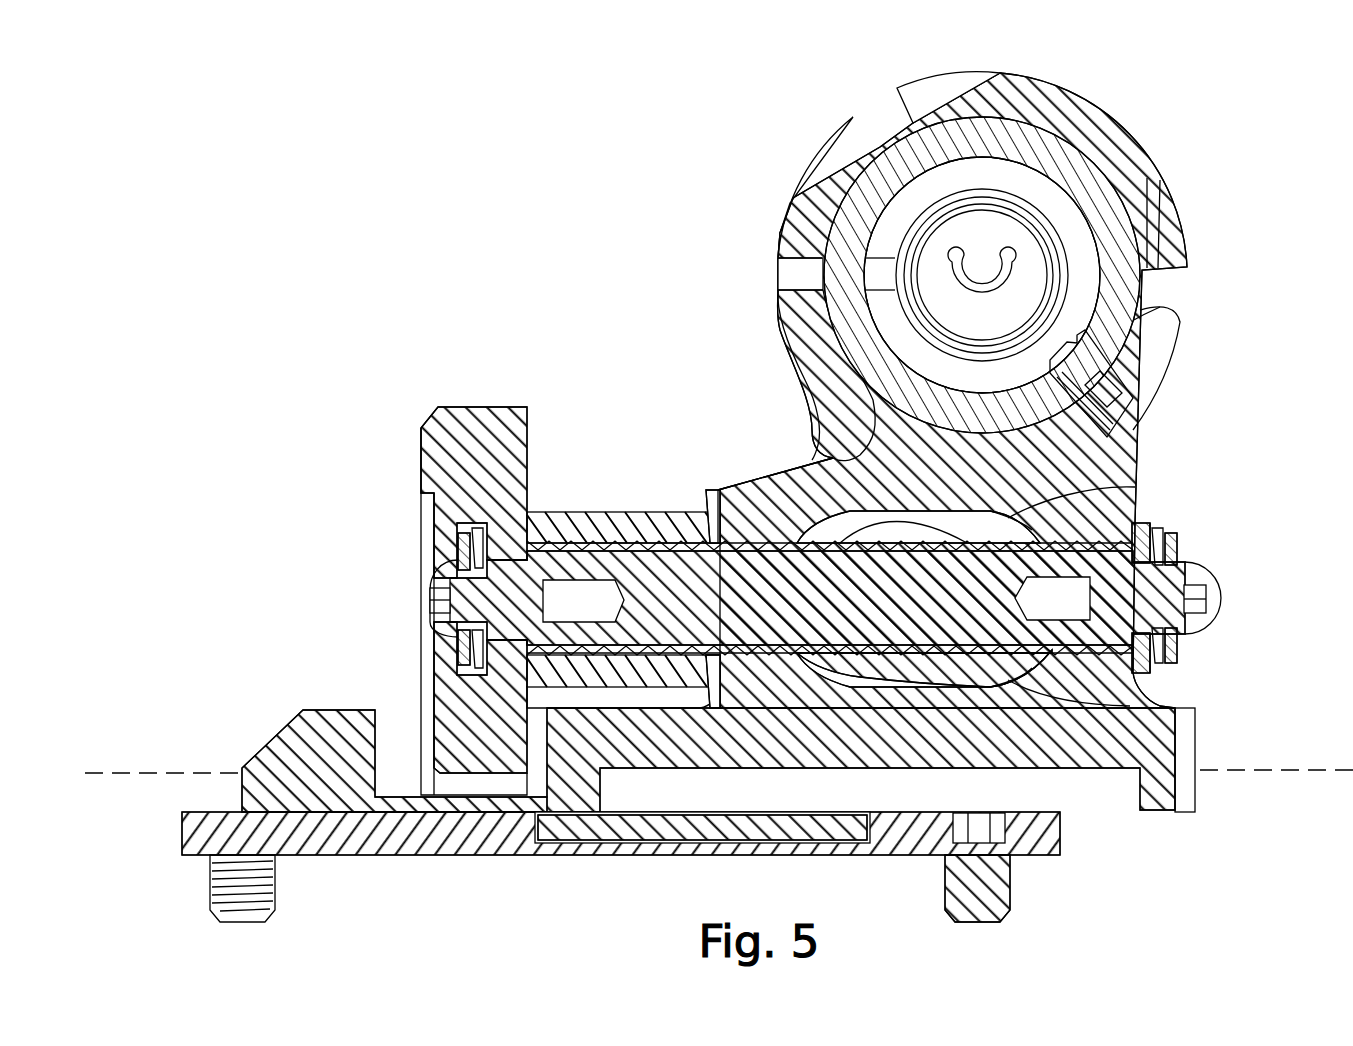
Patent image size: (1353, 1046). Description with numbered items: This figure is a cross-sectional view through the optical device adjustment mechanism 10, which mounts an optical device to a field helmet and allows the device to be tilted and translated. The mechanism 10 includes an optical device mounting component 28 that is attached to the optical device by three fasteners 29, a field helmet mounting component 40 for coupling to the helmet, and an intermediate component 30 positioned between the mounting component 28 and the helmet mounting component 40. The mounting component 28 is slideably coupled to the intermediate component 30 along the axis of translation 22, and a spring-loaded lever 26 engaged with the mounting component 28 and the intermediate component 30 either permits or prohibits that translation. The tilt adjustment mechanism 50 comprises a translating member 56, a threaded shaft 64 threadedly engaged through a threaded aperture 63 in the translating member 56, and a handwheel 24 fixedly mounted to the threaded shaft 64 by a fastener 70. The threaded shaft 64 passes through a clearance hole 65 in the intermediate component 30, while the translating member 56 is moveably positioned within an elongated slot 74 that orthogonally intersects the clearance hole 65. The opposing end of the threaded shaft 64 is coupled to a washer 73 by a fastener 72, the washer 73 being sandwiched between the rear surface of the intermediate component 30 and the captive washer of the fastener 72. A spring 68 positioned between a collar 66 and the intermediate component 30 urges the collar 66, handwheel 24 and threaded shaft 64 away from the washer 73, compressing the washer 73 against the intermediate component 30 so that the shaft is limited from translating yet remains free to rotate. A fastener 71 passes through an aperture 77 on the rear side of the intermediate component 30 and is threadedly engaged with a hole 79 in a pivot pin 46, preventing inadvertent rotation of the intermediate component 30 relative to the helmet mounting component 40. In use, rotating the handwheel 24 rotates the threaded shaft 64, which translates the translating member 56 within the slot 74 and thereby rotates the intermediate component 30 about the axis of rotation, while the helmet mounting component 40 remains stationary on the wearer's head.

The mechanism 10 is at (1250, 176).
The axis of translation 22 is at (120, 774).
The handwheel 24 is at (416, 455).
The spring-loaded lever 26 is at (648, 843).
The optical device mounting component 28 is at (462, 843).
The fasteners 29 is at (278, 890).
The intermediate component 30 is at (275, 728).
The field helmet mounting component 40 is at (1194, 263).
The pivot pin 46 is at (1035, 175).
The tilt adjustment mechanism 50 is at (655, 476).
The translating member 56 is at (818, 462).
The threaded aperture 63 is at (893, 519).
The threaded shaft 64 is at (636, 528).
The clearance hole 65 is at (713, 490).
The collar 66 is at (553, 515).
The spring 68 is at (710, 492).
The fastener 70 is at (435, 580).
The fastener 71 is at (1092, 343).
The fastener 72 is at (1210, 580).
The washer 73 is at (1150, 690).
The elongated slot 74 is at (1140, 497).
The aperture 77 is at (1097, 375).
The hole 79 is at (1095, 210).